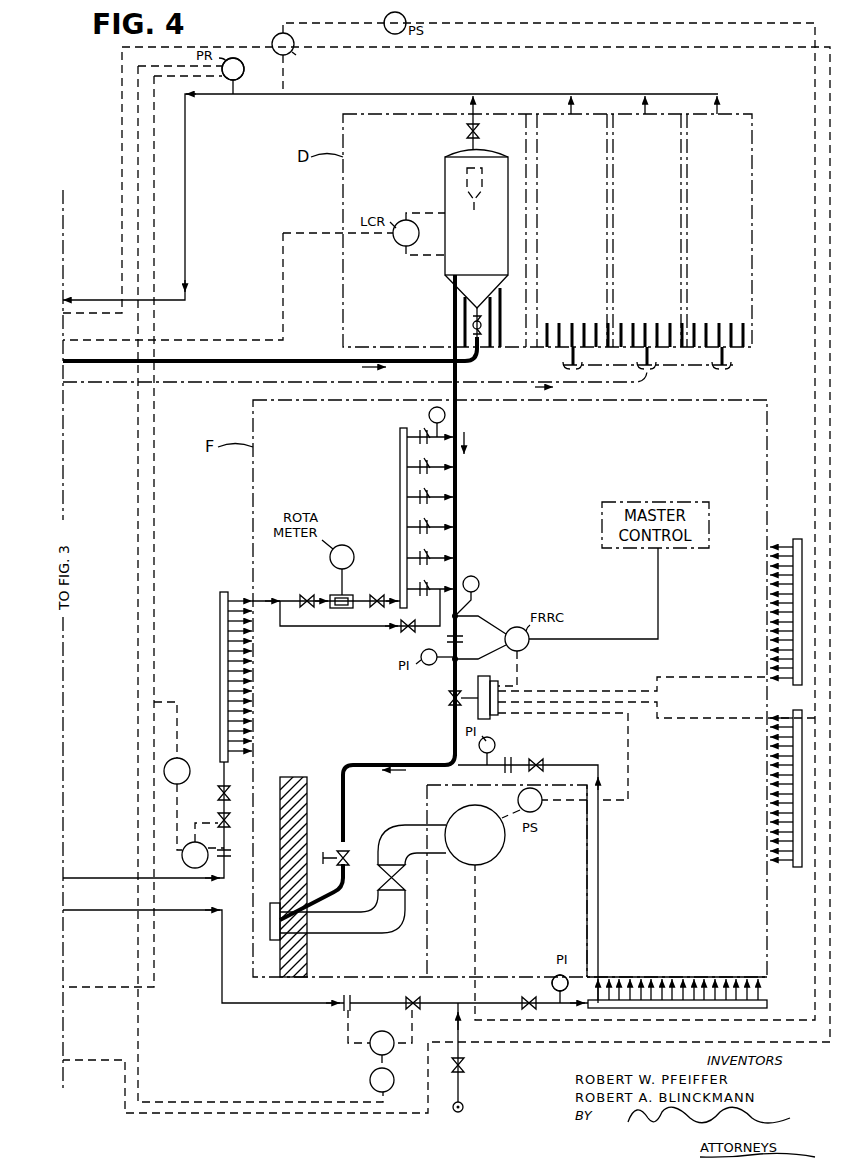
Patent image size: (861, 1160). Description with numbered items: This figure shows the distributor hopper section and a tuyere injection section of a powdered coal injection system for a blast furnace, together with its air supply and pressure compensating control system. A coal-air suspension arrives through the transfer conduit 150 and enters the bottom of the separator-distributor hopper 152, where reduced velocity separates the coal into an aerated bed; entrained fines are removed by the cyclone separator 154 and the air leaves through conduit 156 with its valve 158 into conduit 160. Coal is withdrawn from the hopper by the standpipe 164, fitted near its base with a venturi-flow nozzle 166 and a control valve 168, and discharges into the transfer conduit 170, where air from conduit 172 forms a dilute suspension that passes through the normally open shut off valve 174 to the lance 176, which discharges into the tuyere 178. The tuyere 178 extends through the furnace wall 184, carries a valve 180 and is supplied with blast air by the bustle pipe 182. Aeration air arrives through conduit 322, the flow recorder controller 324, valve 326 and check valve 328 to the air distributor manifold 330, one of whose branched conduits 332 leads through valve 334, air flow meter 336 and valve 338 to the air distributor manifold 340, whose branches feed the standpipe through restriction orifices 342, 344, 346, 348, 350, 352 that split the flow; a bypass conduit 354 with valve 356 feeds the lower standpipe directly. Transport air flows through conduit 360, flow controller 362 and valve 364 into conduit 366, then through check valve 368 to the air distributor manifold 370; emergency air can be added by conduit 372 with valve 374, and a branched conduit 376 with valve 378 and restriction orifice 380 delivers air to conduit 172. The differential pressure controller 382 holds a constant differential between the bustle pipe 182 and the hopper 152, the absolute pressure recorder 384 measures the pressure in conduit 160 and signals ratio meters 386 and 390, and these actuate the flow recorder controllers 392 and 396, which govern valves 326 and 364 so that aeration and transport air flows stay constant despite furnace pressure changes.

The transfer conduit 150 is at (112, 366).
The separator-distributor hopper 152 is at (494, 241).
The cyclone separator 154 is at (467, 181).
The conduit 156 is at (477, 100).
The valve 158 is at (467, 130).
The conduit 160 is at (336, 94).
The standpipe 164 is at (459, 421).
The venturi-flow nozzle 166 is at (462, 641).
The control valve 168 is at (448, 698).
The transfer conduit 170 is at (398, 763).
The conduit 172 is at (462, 767).
The shut off valve 174 is at (346, 852).
The lance 176 is at (318, 893).
The tuyere 178 is at (338, 933).
The valve 180 is at (405, 880).
The bustle pipe 182 is at (494, 855).
The wall 184 is at (300, 777).
The conduit 322 is at (110, 878).
The flow recorder controller 324 is at (231, 858).
The valve 326 is at (218, 818).
The check valve 328 is at (217, 793).
The air distributor manifold 330 is at (220, 618).
The branched conduit 332 is at (246, 600).
The valve 334 is at (305, 597).
The air flow meter 336 is at (343, 608).
The valve 338 is at (377, 596).
The air distributor manifold 340 is at (400, 509).
The restriction orifice 342 is at (420, 432).
The restriction orifice 344 is at (430, 459).
The restriction orifice 346 is at (430, 489).
The restriction orifice 348 is at (430, 519).
The restriction orifice 350 is at (430, 550).
The restriction orifice 352 is at (430, 581).
The bypass conduit 354 is at (335, 628).
The valve 356 is at (403, 632).
The conduit 360 is at (112, 910).
The flow controller 362 is at (344, 996).
The valve 364 is at (410, 997).
The conduit 366 is at (528, 997).
The check valve 368 is at (555, 976).
The air distributor manifold 370 is at (767, 1004).
The conduit 372 is at (462, 1087).
The valve 374 is at (464, 1067).
The branched conduit 376 is at (599, 943).
The valve 378 is at (543, 762).
The restriction orifice 380 is at (509, 757).
The differential pressure controller 382 is at (274, 42).
The absolute pressure recorder 384 is at (244, 70).
The ratio meter 386 is at (196, 755).
The ratio meter 390 is at (370, 1082).
The flow recorder controller 392 is at (193, 864).
The flow recorder controller 396 is at (370, 1044).